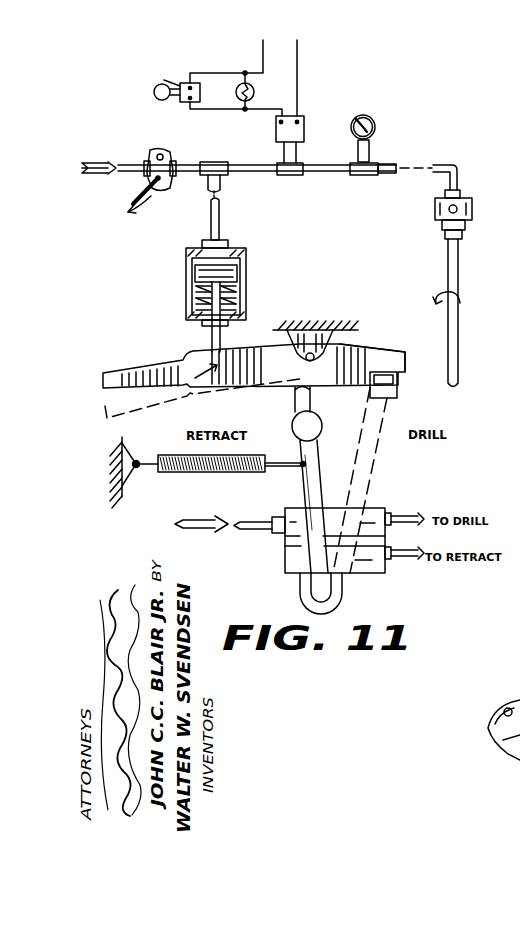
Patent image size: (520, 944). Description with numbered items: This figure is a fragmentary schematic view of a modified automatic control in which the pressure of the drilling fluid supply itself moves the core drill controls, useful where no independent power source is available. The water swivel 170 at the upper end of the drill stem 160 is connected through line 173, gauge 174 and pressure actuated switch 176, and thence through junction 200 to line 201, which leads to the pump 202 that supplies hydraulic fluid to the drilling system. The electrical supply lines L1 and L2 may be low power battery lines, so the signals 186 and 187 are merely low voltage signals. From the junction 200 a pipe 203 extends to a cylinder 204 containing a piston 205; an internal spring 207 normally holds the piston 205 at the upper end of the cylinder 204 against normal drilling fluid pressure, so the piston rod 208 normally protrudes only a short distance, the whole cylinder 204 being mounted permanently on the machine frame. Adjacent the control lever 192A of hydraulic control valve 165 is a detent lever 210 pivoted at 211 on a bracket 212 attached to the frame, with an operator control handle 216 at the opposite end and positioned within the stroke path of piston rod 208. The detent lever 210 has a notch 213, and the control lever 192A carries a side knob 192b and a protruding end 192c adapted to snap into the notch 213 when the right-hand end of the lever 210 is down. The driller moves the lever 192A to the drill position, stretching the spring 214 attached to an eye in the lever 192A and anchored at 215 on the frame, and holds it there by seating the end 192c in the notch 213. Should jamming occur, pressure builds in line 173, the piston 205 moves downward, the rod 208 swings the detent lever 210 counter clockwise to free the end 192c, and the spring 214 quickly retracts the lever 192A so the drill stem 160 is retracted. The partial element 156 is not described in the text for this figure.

The electrical supply line L1 is at (297, 52).
The electrical supply line L2 is at (263, 53).
The work clamp (partial) 156 is at (504, 707).
The drill stem 160 is at (459, 272).
The hydraulic control valve 165 is at (282, 585).
The water swivel 170 is at (473, 211).
The line 173 is at (396, 176).
The gauge 174 is at (376, 125).
The pressure actuated switch 176 is at (276, 132).
The signal 186 is at (254, 96).
The signal 187 is at (186, 84).
The control lever 192A is at (306, 482).
The knob 192b is at (322, 429).
The protruding end 192c is at (296, 406).
The junction 200 is at (207, 160).
The line 201 is at (188, 177).
The pump 202 is at (150, 153).
The pipe 203 is at (222, 222).
The cylinder 204 is at (248, 290).
The piston 205 is at (246, 264).
The internal spring 207 is at (186, 305).
The piston rod 208 is at (212, 338).
The detent lever 210 is at (378, 352).
The pivot 211 is at (345, 340).
The bracket 212 is at (318, 322).
The notch 213 is at (399, 389).
The spring 214 is at (194, 474).
The anchor 215 is at (140, 462).
The operator control handle 216 is at (131, 367).